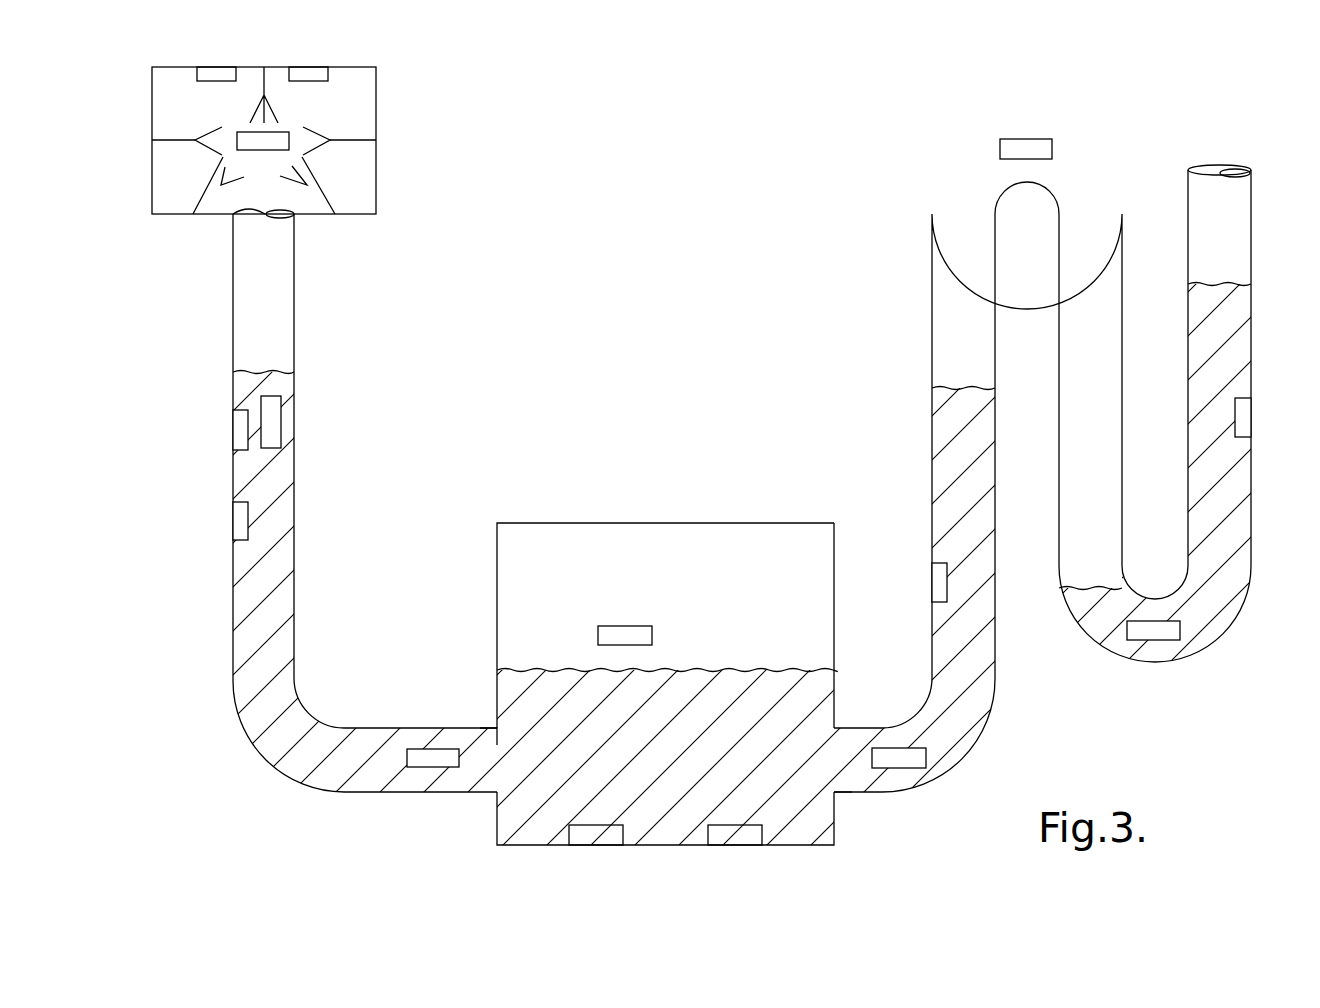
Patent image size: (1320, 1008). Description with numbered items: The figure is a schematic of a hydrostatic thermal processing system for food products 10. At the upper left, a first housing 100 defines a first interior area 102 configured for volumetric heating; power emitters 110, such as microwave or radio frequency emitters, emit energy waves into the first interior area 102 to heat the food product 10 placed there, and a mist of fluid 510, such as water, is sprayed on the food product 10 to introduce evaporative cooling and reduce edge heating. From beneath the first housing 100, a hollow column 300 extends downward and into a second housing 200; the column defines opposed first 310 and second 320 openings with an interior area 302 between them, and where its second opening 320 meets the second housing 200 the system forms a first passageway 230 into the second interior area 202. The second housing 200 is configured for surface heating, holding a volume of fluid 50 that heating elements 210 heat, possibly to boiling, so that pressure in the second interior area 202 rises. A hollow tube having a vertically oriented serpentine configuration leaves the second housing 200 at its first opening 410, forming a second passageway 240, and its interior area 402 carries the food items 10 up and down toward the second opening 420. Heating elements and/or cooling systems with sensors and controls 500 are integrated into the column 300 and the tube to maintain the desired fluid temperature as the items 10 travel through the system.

The food product 10 is at (280, 132).
The volume of fluid 50 is at (682, 775).
The first housing 100 is at (377, 72).
The first interior area 102 is at (266, 76).
The power emitters 110 is at (219, 75).
The second housing 200 is at (602, 553).
The second interior area 202 is at (795, 552).
The heating element 210 is at (598, 832).
The first passageway 230 is at (505, 757).
The second passageway 240 is at (863, 760).
The hollow column 300 is at (295, 375).
The interior area of the hollow column 302 is at (275, 305).
The first opening of the hollow column 310 is at (297, 218).
The second opening of the hollow column 320 is at (497, 727).
The interior area of the hollow tube 402 is at (953, 214).
The first opening of the hollow tube 410 is at (837, 793).
The second opening of the hollow tube 420 is at (1228, 172).
The heating elements and/or cooling systems with sensors and control systems 500 is at (233, 432).
The mist of fluid 510 is at (172, 132).